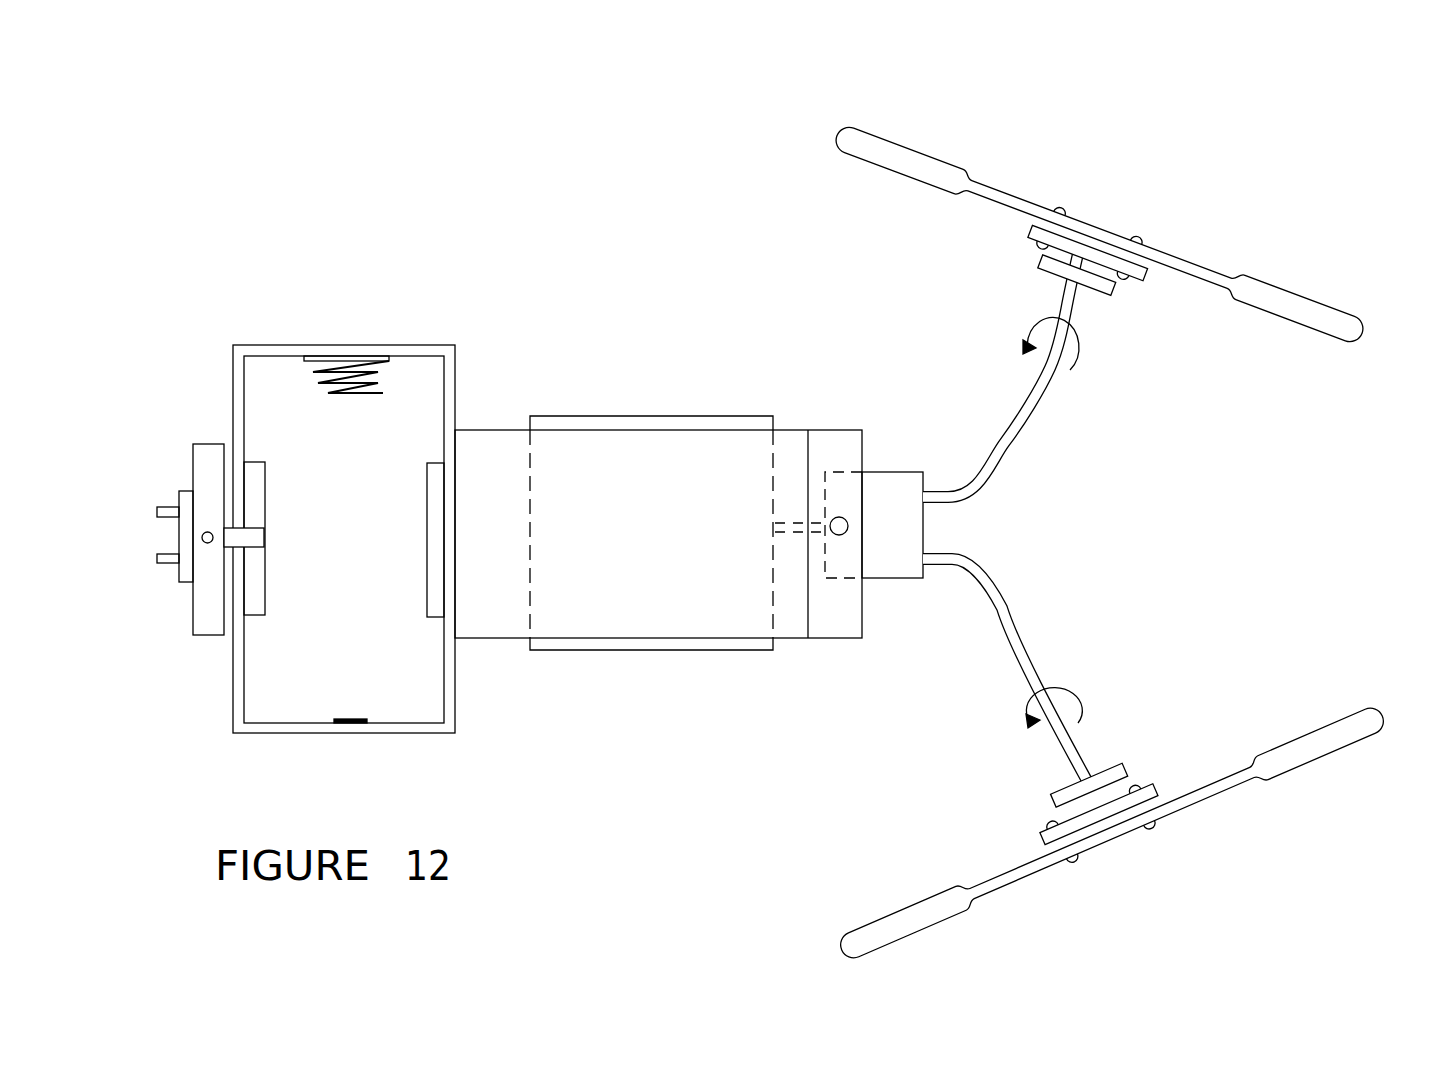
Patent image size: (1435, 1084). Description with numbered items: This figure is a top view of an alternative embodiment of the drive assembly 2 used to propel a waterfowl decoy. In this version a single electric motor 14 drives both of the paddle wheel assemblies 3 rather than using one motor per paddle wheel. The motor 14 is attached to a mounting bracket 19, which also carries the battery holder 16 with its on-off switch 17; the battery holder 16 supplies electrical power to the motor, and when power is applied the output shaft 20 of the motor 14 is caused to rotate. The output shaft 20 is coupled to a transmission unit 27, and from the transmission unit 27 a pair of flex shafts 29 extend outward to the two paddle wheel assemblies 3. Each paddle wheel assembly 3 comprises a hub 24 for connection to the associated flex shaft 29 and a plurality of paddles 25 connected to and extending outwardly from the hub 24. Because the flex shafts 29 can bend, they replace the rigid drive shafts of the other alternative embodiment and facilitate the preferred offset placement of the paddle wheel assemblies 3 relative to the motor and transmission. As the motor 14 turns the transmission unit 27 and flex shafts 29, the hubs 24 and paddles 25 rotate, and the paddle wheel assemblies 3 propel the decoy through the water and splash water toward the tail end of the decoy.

The drive assembly 2 is at (764, 536).
The paddle wheel assembly 3 is at (1120, 521).
The electric motor 14 is at (597, 422).
The battery holder 16 is at (408, 348).
The on-off switch 17 is at (203, 472).
The mounting bracket 19 is at (495, 445).
The output shaft 20 is at (797, 527).
The hub 24 is at (1077, 237).
The paddle 25 is at (868, 142).
The transmission unit 27 is at (900, 528).
The flex shaft 29 is at (1023, 418).